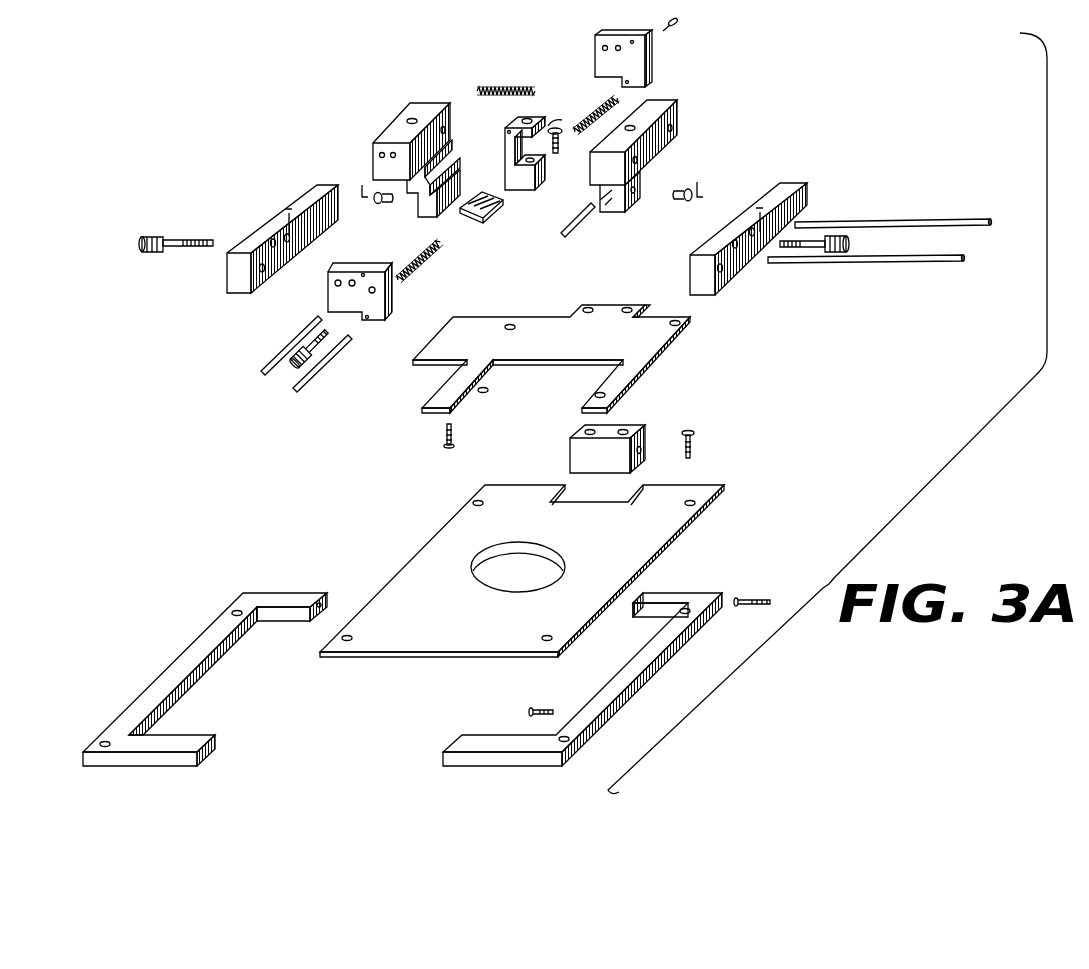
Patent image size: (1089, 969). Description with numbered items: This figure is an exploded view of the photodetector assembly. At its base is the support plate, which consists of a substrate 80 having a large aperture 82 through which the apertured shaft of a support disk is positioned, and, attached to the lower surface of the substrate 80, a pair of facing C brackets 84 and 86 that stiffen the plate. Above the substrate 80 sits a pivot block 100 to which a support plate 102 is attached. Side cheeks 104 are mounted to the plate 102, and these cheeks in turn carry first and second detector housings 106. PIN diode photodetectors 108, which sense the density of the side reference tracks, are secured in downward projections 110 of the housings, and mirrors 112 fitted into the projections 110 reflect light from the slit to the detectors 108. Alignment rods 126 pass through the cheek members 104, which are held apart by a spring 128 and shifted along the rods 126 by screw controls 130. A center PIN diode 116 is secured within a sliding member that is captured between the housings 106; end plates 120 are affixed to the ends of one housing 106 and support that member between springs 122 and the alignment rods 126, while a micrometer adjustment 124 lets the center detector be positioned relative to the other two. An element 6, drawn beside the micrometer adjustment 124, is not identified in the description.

The guide rod 6 is at (298, 337).
The substrate 80 is at (623, 538).
The aperture 82 is at (548, 567).
The C bracket 84 is at (652, 665).
The C bracket 86 is at (196, 670).
The pivot block 100 is at (634, 425).
The support plate 102 is at (665, 338).
The side cheek 104 is at (268, 221).
The detector housing 106 is at (398, 128).
The PIN diode photodetector 108 is at (380, 204).
The downward projection 110 is at (430, 217).
The mirror 112 is at (497, 206).
The PIN diode 116 is at (556, 152).
The end plate 120 is at (650, 70).
The spring 122 is at (597, 106).
The micrometer adjustment 124 is at (322, 367).
The alignment rod 126 is at (932, 222).
The spring 128 is at (512, 86).
The screw control 130 is at (840, 236).